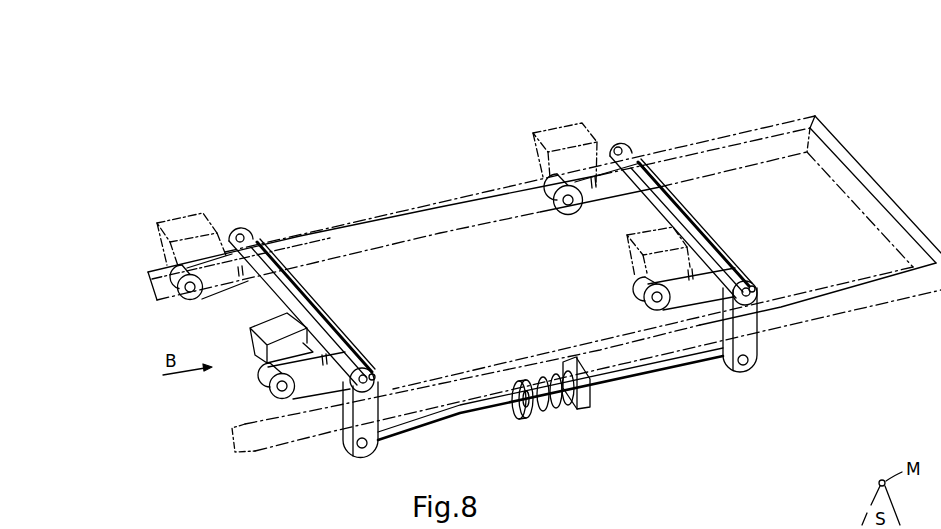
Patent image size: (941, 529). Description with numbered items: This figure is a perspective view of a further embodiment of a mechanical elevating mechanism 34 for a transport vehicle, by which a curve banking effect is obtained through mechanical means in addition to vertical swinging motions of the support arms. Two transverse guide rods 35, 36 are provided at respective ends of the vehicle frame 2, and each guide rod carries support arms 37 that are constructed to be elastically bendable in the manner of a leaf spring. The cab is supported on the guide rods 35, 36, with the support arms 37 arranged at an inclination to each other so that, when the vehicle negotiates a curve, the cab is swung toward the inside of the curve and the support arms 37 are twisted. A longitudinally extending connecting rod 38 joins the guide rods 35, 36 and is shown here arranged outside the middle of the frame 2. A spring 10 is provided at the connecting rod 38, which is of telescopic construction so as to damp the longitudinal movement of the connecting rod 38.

The vehicle frame 2 is at (335, 243).
The mechanical elevating mechanism 34 is at (439, 183).
The transverse guide rod 35 is at (313, 313).
The transverse guide rod 36 is at (698, 223).
The support arm 37 is at (333, 348).
The connecting rod 38 is at (660, 377).
The spring 10 is at (555, 413).